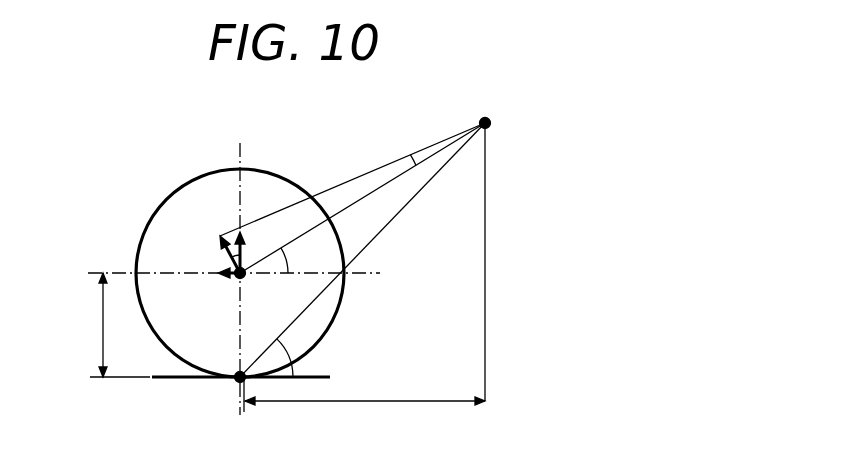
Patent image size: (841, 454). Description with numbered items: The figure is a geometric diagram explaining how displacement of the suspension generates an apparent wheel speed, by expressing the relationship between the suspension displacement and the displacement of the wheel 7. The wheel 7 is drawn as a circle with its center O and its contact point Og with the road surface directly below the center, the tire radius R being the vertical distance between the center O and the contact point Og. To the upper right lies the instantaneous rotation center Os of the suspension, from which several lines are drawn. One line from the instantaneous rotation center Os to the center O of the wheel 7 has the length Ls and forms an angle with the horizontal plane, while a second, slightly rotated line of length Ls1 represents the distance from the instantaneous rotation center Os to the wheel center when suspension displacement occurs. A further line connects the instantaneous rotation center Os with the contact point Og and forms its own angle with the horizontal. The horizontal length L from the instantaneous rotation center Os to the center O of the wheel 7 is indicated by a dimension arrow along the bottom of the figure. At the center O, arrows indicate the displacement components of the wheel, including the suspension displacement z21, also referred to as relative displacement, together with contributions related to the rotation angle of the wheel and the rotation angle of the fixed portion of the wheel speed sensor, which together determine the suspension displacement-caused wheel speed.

The wheel 7 is at (345, 303).
The center of the wheel O is at (249, 285).
The contact point between the wheel and the road surface Og is at (225, 392).
The instantaneous rotation center of the suspension Os is at (501, 122).
The tire radius R is at (114, 325).
The horizontal length from the instantaneous rotation center of the suspension to th L is at (364, 392).
The length from the instantaneous rotation center of the suspension to the center of Ls is at (373, 188).
The length from the instantaneous rotation center of the suspension to the center of Ls1 is at (330, 189).
The suspension displacement z21 is at (236, 228).